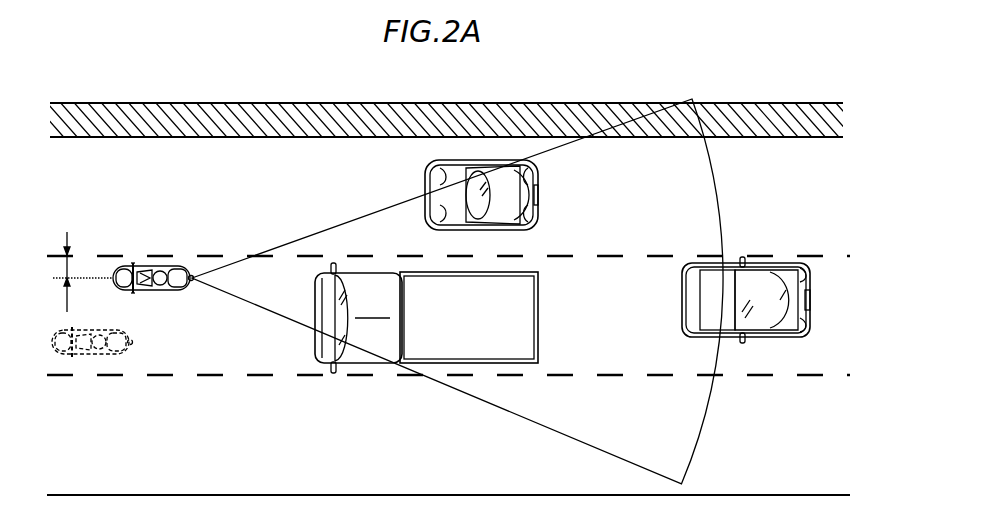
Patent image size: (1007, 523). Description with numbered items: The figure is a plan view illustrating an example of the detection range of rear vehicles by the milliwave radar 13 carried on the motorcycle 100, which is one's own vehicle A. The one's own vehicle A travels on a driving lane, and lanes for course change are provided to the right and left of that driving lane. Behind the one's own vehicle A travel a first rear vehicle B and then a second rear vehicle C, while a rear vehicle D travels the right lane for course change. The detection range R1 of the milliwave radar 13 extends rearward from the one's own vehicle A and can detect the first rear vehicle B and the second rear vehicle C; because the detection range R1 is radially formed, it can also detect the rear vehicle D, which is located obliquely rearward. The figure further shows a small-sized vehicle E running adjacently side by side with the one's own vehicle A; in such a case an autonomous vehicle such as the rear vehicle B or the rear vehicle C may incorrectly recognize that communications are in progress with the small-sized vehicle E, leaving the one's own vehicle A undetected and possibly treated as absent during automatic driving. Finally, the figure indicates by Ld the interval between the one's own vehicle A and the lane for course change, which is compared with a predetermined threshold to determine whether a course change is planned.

The motorcycle 100 is at (166, 255).
The milliwave radar 13 is at (191, 272).
The one's own vehicle A is at (125, 291).
The first rear vehicle B is at (538, 297).
The second rear vehicle C is at (810, 300).
The rear vehicle D is at (540, 209).
The small-sized vehicle E is at (103, 358).
The interval between one's own vehicle and the lane for course change Ld is at (82, 271).
The detection range R1 is at (510, 412).